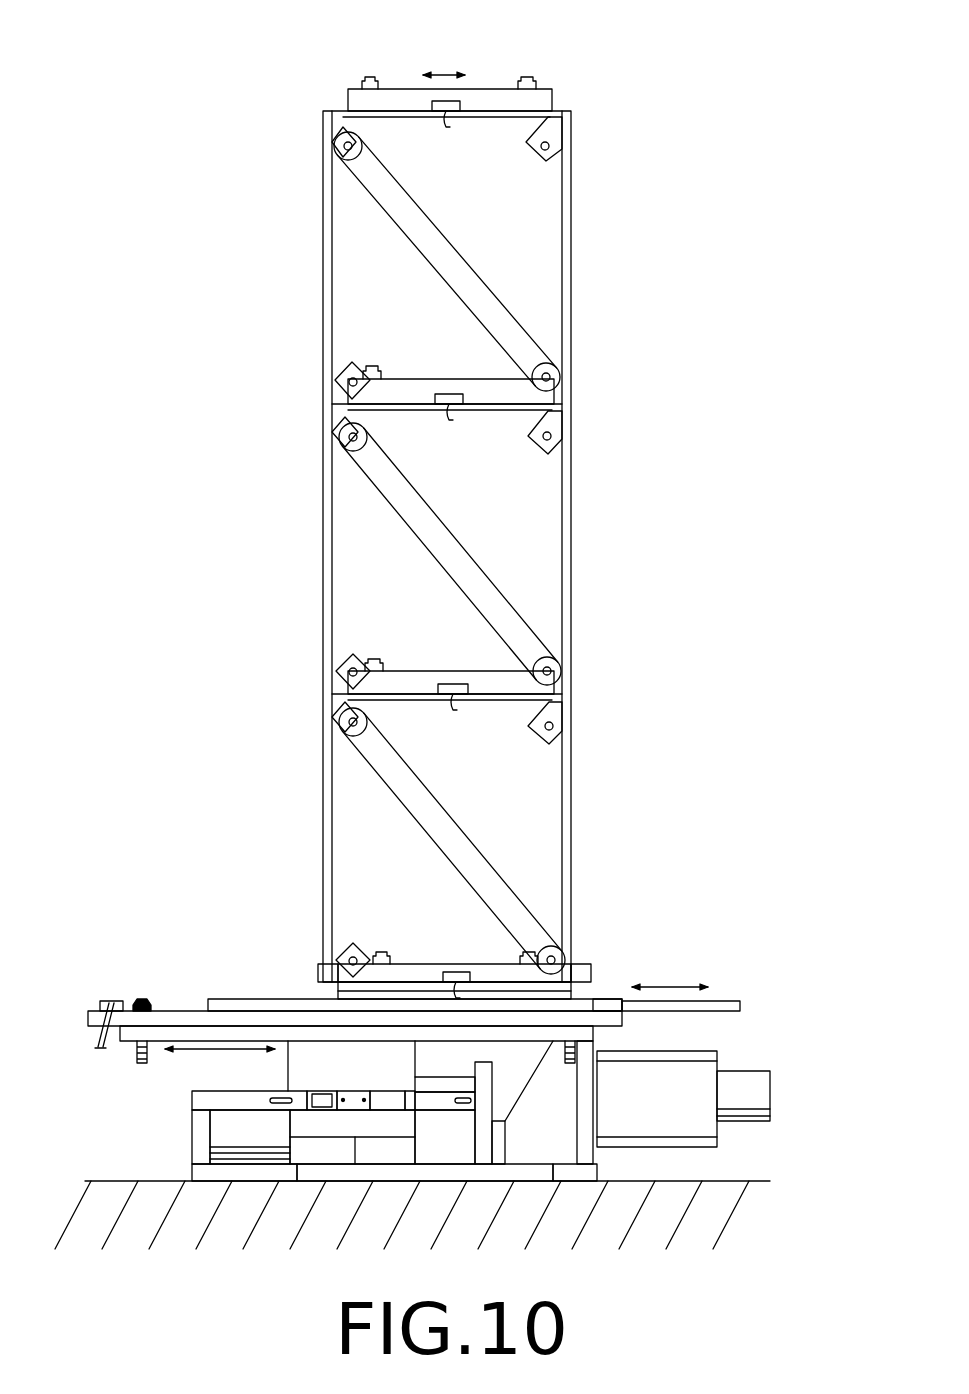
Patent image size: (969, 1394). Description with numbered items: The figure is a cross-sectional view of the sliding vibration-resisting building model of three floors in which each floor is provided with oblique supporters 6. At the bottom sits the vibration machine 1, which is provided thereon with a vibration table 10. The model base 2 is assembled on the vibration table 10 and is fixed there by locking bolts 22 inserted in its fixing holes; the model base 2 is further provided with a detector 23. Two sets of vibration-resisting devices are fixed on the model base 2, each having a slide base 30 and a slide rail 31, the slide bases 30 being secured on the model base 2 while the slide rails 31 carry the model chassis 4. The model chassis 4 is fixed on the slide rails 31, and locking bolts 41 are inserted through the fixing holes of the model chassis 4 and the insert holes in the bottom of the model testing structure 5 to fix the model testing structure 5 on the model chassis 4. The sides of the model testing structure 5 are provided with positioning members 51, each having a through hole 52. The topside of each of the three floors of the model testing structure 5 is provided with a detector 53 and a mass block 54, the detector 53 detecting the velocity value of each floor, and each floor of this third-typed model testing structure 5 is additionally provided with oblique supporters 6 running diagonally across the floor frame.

The vibration machine 1 is at (738, 1052).
The model base 2 is at (186, 1018).
The model chassis 4 is at (320, 1000).
The model testing structure 5 is at (318, 546).
The oblique supporters 6 is at (430, 253).
The vibration table 10 is at (160, 1036).
The locking bolt 22 is at (140, 1002).
The detector 23 is at (103, 1002).
The slide base 30 is at (600, 1003).
The slide rail 31 is at (722, 1003).
The locking bolts 41 is at (335, 992).
The positioning members 51 is at (558, 712).
The through hole 52 is at (561, 730).
The detector 53 is at (462, 108).
The mass block 54 is at (407, 98).